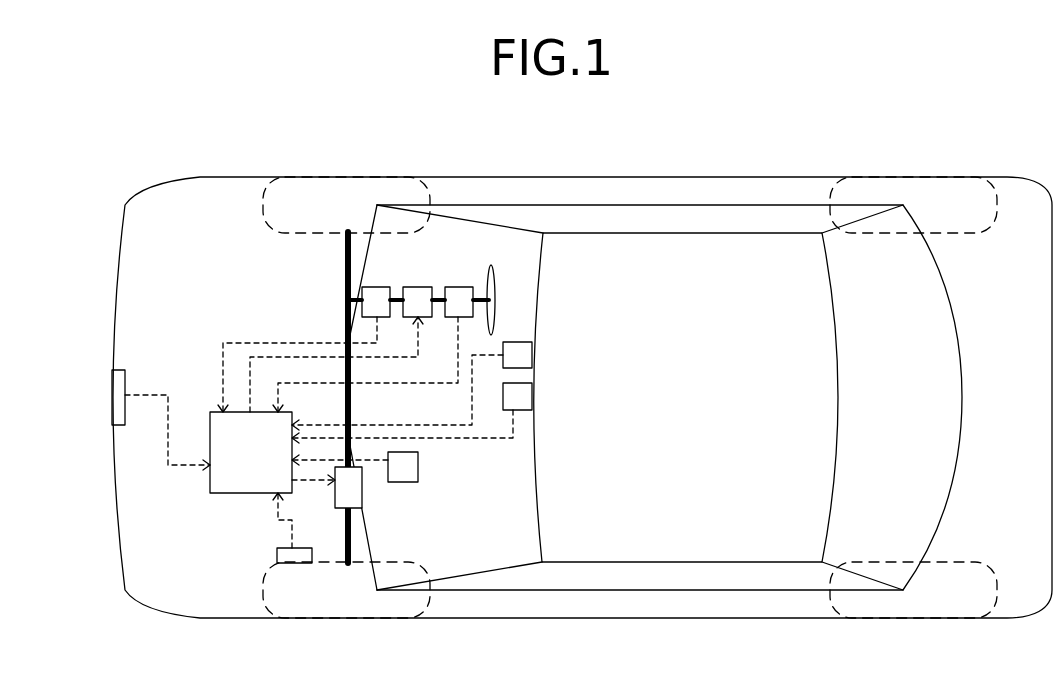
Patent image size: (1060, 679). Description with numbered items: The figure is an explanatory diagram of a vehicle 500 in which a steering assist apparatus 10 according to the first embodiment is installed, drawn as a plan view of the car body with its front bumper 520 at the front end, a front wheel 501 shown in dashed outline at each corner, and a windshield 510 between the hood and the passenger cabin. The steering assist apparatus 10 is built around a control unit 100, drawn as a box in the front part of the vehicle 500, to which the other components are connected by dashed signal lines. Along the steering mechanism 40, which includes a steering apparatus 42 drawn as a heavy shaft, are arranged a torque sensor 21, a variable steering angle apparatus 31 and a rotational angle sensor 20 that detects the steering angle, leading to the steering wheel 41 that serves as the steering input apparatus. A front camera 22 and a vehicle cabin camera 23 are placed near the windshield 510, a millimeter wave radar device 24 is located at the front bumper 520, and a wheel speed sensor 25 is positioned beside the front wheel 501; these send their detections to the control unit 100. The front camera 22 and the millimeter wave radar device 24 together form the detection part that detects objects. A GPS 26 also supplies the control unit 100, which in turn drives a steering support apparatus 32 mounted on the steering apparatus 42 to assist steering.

The vehicle 500 is at (653, 167).
The front wheel 501 is at (370, 178).
The windshield 510 is at (533, 343).
The front bumper 520 is at (117, 268).
The steering assist apparatus 10 is at (168, 542).
The control unit 100 is at (251, 452).
The rotational angle sensor 20 is at (373, 349).
The torque sensor 21 is at (304, 349).
The variable steering angle apparatus 31 is at (341, 349).
The front camera 22 is at (412, 386).
The vehicle cabin camera 23 is at (412, 413).
The millimeter wave radar device 24 is at (123, 370).
The wheel speed sensor 25 is at (277, 550).
The GPS 26 is at (355, 467).
The steering support apparatus 32 is at (327, 487).
The steering mechanism 40 is at (414, 397).
The steering wheel 41 is at (512, 262).
The steering apparatus 42 is at (348, 297).